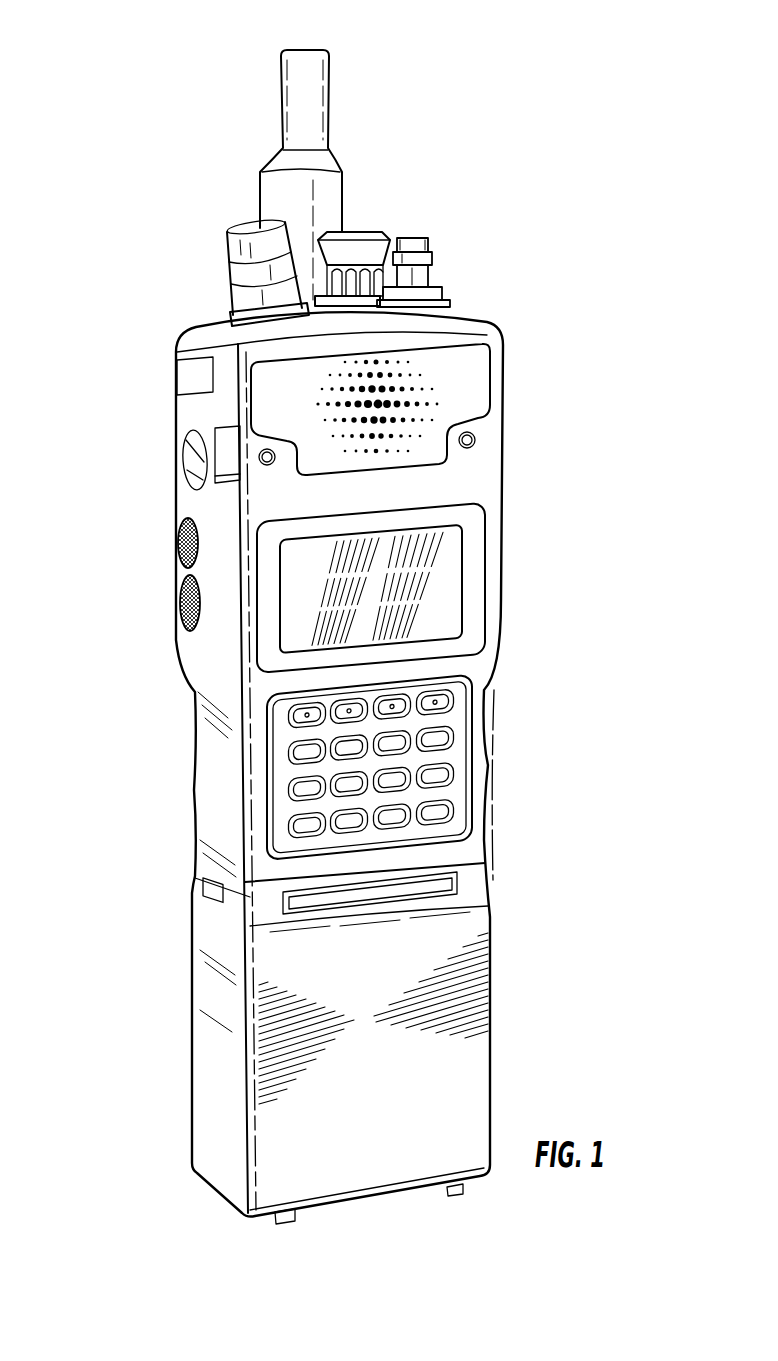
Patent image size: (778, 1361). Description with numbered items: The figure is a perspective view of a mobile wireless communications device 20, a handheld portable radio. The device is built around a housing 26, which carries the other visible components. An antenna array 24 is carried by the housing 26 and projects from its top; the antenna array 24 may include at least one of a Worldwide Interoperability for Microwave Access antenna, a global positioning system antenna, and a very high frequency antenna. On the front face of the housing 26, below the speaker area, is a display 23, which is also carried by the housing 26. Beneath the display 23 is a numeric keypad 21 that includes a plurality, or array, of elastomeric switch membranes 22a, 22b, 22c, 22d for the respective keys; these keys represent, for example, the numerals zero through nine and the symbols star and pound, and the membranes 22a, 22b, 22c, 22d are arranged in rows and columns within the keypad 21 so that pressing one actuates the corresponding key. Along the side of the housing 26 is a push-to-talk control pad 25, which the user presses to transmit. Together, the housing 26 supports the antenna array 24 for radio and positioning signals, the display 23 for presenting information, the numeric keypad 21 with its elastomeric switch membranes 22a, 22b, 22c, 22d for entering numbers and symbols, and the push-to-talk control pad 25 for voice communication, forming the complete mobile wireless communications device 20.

The mobile wireless communications device 20 is at (301, 621).
The numeric keypad 21 is at (300, 739).
The elastomeric switch membrane 22a is at (288, 718).
The elastomeric switch membrane 22b is at (288, 755).
The elastomeric switch membrane 22c is at (288, 790).
The elastomeric switch membrane 22d is at (135, 783).
The display 23 is at (485, 537).
The antenna array 24 is at (418, 228).
The push-to-talk control pad 25 is at (173, 535).
The housing 26 is at (493, 415).